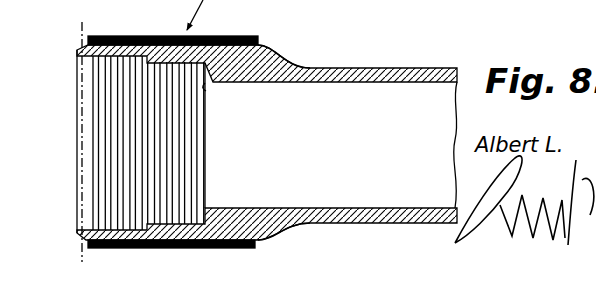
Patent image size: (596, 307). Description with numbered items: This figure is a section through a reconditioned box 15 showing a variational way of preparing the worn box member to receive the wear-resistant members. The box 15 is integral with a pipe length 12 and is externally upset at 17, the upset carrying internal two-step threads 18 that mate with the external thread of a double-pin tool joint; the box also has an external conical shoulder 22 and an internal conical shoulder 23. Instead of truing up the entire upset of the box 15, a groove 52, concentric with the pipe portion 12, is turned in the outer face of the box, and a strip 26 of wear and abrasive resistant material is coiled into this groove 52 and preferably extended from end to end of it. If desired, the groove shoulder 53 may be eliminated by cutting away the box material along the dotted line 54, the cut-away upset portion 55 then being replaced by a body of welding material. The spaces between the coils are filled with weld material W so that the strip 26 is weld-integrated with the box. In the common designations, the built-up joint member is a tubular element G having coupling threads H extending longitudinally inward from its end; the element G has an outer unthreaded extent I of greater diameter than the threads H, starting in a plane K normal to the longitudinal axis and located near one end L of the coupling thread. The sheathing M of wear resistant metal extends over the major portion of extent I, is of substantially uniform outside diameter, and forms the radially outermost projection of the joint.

The pipe length 12 is at (390, 68).
The box 15 is at (295, 241).
The external upset 17 is at (287, 53).
The internal two-step threads 18 is at (103, 105).
The external conical shoulder 22 is at (79, 45).
The internal conical shoulder 23 is at (201, 88).
The strip 26 is at (160, 249).
The groove 52 is at (97, 243).
The groove shoulder 53 is at (243, 248).
The dotted line 54 is at (266, 247).
The cut-away upset portion 55 is at (264, 247).
The plane K is at (82, 22).
The weld material W is at (163, 37).
The outer unthreaded longitudinal extent I is at (210, 36).
The coupling threads H is at (117, 82).
The end of coupling thread L is at (90, 133).
The sheathing M is at (127, 249).
The tubular element G is at (252, 182).